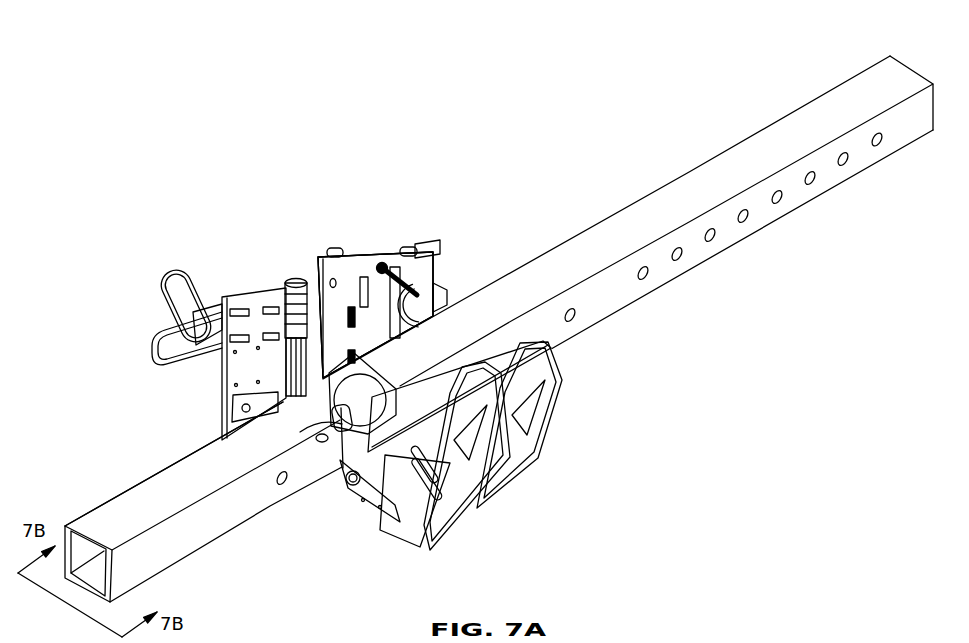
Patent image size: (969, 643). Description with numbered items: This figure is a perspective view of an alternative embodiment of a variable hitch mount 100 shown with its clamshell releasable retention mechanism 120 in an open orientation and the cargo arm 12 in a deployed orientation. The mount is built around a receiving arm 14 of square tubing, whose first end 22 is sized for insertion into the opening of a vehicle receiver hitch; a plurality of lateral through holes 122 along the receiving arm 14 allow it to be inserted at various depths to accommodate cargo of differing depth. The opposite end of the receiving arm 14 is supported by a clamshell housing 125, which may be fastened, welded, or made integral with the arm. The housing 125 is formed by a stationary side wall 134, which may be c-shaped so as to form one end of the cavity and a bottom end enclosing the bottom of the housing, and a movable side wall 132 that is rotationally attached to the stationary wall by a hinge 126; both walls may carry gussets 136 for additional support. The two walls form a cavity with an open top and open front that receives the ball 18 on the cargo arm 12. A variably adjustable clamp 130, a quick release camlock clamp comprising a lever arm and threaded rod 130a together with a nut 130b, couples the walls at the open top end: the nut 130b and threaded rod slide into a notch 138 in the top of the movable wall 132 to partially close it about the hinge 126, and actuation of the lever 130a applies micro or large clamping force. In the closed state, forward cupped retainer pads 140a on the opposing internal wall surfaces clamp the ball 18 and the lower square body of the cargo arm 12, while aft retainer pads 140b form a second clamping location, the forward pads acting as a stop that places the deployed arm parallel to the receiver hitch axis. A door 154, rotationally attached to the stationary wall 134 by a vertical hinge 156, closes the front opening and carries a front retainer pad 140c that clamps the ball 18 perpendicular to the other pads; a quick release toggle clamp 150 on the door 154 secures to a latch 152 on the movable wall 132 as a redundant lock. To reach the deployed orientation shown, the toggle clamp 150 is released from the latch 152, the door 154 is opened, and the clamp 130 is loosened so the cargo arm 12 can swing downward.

The cargo arm 12 is at (152, 475).
The receiving arm 14 is at (688, 172).
The ball 18 is at (373, 400).
The first end 22 is at (870, 70).
The variable hitch mount 100 is at (478, 127).
The clamshell releasable retention mechanism 120 is at (493, 446).
The lateral through holes 122 is at (779, 205).
The clamshell housing 125 is at (330, 242).
The hinge 126 is at (352, 482).
The variably adjustable clamp 130 is at (356, 222).
The lever arm and threaded rod 130a is at (373, 243).
The nut 130b is at (447, 290).
The movable side wall 132 is at (552, 348).
The stationary side wall 134 is at (323, 272).
The gussets 136 is at (412, 520).
The notch 138 is at (520, 340).
The forward cupped retainer pads 140a is at (342, 424).
The aft retainer pads 140b is at (425, 245).
The front retainer pad 140c is at (235, 402).
The quick release toggle clamp 150 is at (165, 325).
The latch 152 is at (457, 473).
The door 154 is at (222, 288).
The vertical hinge 156 is at (285, 287).